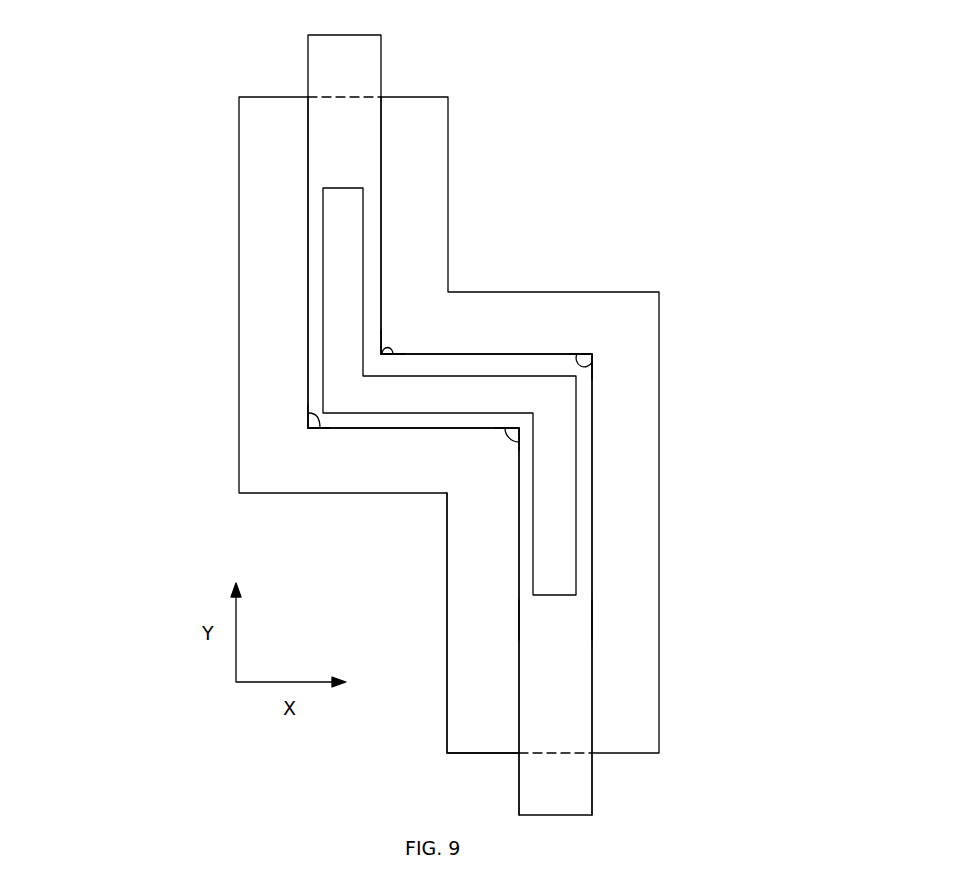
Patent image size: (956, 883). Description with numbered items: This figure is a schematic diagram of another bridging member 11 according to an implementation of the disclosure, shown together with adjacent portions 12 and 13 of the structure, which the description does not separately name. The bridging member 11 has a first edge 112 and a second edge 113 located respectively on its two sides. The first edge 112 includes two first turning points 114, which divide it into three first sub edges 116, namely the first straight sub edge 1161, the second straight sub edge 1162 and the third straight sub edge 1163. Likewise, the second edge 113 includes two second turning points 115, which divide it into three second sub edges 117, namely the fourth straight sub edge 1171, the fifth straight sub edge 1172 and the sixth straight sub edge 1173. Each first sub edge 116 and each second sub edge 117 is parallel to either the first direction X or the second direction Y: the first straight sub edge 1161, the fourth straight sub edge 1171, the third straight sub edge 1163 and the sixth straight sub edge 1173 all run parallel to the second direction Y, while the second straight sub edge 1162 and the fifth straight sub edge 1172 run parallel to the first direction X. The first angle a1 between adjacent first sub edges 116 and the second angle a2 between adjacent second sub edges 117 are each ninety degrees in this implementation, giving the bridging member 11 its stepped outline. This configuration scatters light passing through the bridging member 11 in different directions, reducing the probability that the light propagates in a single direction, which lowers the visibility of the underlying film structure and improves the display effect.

The bridging member 11 is at (350, 60).
The second lead portion 12 is at (342, 198).
The main body 13 is at (413, 118).
The first edge 112 is at (593, 618).
The second edge 113 is at (518, 616).
The first turning point 114 is at (382, 353).
The second turning point 115 is at (312, 428).
The first sub edge 116 is at (593, 663).
The first straight sub edge 1161 is at (382, 242).
The second straight sub edge 1162 is at (518, 353).
The third straight sub edge 1163 is at (595, 565).
The second sub edge 117 is at (518, 657).
The fourth straight sub edge 1171 is at (310, 225).
The fifth straight sub edge 1172 is at (377, 427).
The sixth straight sub edge 1173 is at (520, 578).
The first angle a1 is at (393, 333).
The second angle a2 is at (312, 416).